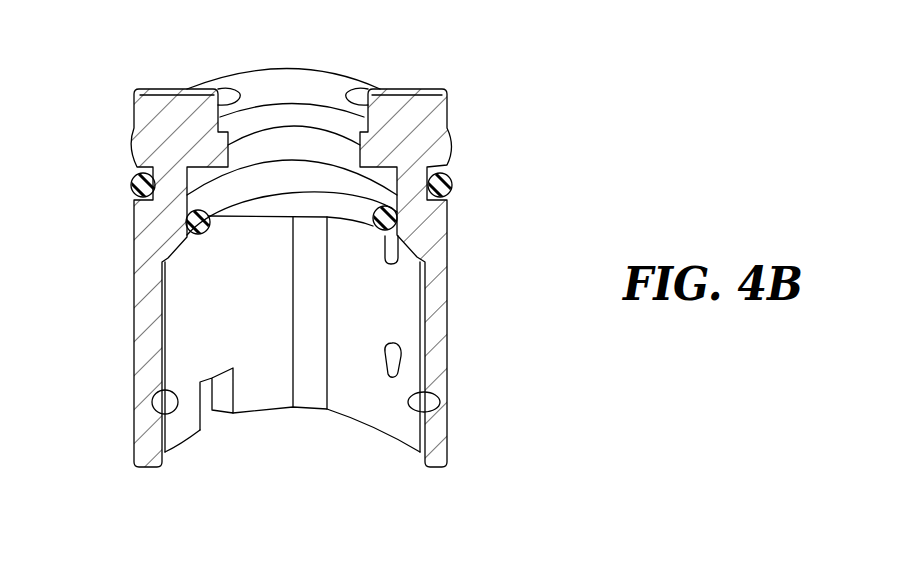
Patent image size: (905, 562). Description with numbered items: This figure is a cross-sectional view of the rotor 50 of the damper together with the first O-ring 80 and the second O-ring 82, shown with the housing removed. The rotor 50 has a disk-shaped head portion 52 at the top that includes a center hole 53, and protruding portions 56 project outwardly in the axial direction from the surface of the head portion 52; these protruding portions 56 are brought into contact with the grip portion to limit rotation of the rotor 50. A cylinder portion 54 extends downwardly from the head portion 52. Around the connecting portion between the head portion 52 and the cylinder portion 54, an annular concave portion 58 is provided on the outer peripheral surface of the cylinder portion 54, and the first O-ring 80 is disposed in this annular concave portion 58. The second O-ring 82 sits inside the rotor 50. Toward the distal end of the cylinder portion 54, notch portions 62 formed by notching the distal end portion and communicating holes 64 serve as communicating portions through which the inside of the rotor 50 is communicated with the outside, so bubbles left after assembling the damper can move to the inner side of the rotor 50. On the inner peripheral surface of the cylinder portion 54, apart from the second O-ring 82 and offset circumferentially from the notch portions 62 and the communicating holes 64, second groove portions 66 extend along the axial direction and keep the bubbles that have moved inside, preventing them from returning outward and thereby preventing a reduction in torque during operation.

The rotor 50 is at (447, 345).
The head portion 52 is at (317, 68).
The center hole 53 is at (283, 110).
The cylinder portion 54 is at (137, 343).
The protruding portions 56 is at (165, 107).
The annular concave portion 58 is at (432, 165).
The notch portions 62 is at (223, 389).
The communicating holes 64 is at (390, 374).
The second groove portions 66 is at (137, 410).
The first O-ring 80 is at (452, 185).
The second O-ring 82 is at (400, 208).